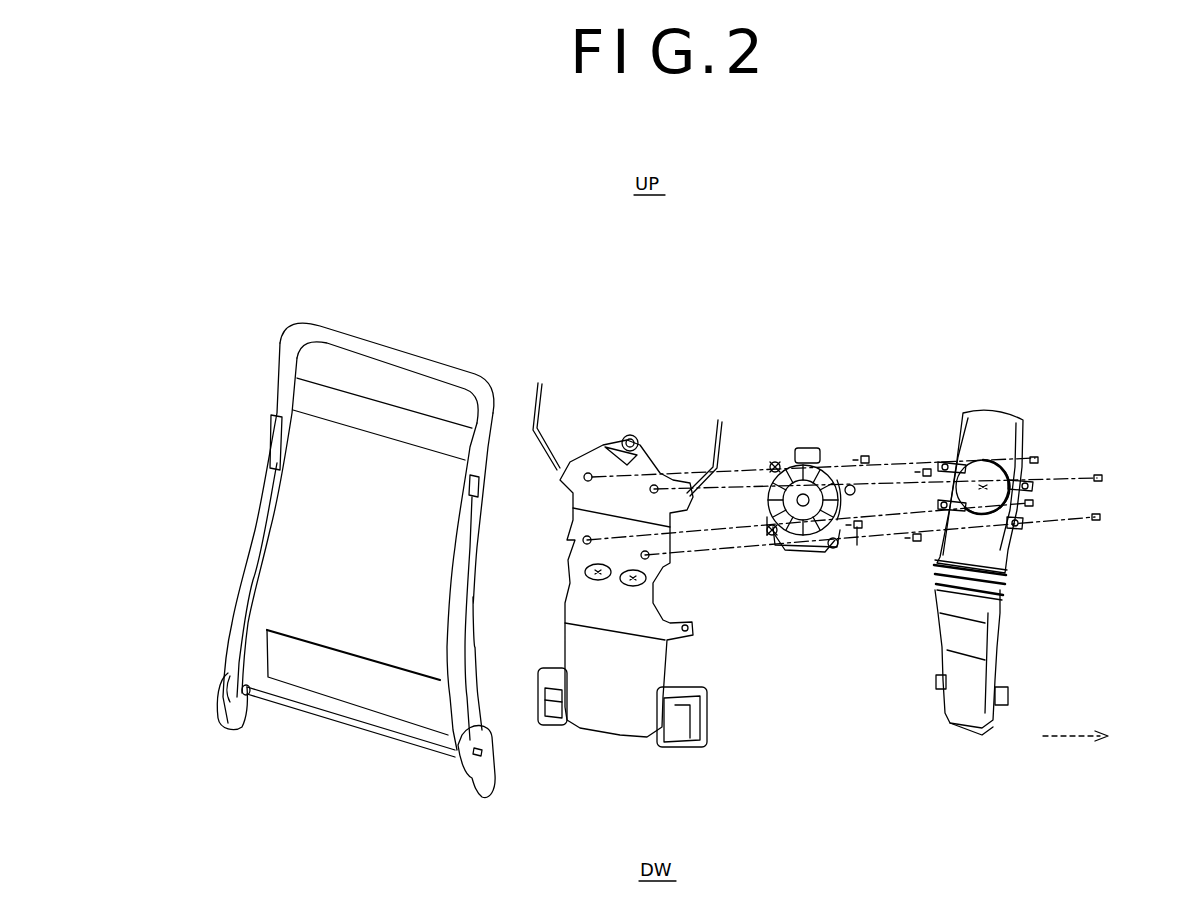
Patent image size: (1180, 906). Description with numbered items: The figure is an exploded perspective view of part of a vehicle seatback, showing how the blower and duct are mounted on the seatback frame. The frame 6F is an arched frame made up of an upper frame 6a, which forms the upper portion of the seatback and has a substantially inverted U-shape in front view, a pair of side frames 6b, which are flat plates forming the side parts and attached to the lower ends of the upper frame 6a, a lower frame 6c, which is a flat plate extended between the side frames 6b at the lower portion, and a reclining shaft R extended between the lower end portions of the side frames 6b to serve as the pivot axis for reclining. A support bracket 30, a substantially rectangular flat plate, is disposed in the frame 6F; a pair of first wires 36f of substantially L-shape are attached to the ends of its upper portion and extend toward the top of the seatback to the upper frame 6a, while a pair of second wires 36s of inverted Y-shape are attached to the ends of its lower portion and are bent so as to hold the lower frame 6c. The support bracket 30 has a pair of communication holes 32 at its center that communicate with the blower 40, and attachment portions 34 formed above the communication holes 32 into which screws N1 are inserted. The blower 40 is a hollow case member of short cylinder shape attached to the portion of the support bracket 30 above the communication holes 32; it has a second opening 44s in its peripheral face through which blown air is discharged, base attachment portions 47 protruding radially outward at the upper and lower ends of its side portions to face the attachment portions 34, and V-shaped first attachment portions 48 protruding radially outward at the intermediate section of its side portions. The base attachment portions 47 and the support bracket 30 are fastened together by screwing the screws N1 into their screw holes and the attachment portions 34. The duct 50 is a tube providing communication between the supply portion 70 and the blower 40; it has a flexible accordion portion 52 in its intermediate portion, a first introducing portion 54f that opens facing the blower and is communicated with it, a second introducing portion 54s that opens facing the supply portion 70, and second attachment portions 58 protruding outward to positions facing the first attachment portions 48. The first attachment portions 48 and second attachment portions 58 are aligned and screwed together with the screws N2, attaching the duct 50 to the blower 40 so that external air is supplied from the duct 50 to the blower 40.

The frame 6F is at (384, 334).
The upper frame 6a is at (434, 370).
The side frames 6b is at (272, 437).
The lower frame 6c is at (360, 670).
The reclining shaft R is at (398, 745).
The support bracket 30 is at (645, 445).
The first wires 36f is at (542, 400).
The second wires 36s is at (540, 676).
The attachment portions 34 is at (588, 481).
The communication holes 32 is at (598, 582).
The blower 40 is at (815, 445).
The second opening 44s is at (806, 565).
The base attachment portions 47 is at (774, 462).
The first attachment portions 48 is at (765, 538).
The screws N1 is at (868, 456).
The duct 50 is at (997, 408).
The accordion portion 52 is at (1005, 580).
The first introducing portion 54f is at (987, 495).
The second introducing portion 54s is at (988, 725).
The second attachment portions 58 is at (945, 462).
The screws N2 is at (1037, 457).
The supply portion 70 is at (1102, 739).